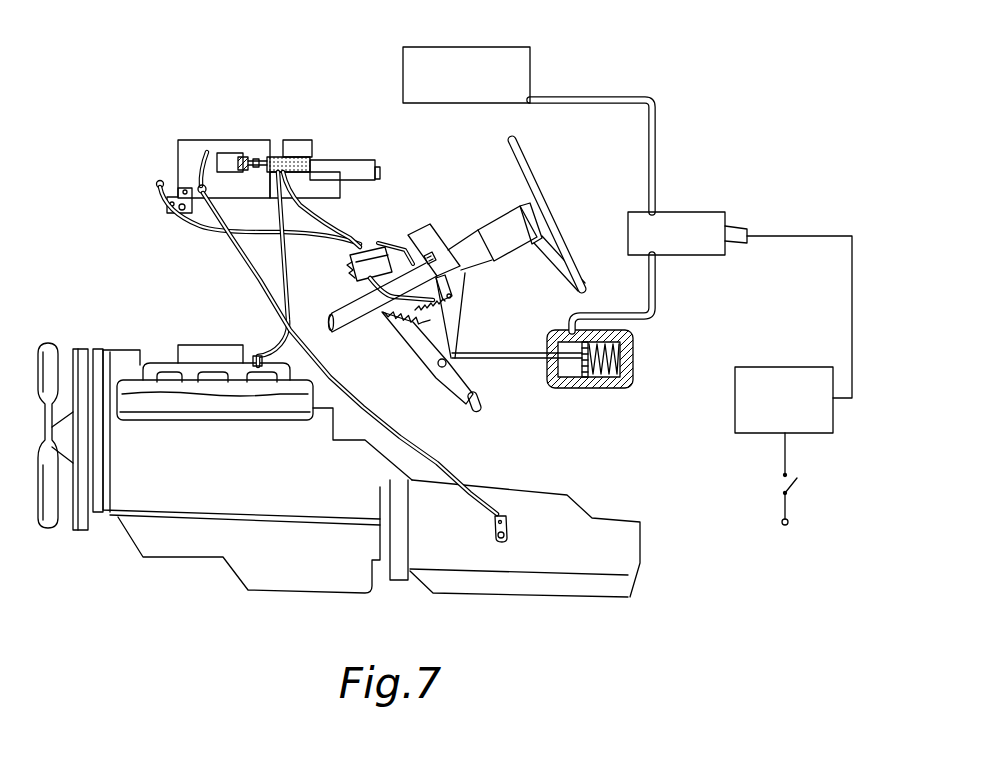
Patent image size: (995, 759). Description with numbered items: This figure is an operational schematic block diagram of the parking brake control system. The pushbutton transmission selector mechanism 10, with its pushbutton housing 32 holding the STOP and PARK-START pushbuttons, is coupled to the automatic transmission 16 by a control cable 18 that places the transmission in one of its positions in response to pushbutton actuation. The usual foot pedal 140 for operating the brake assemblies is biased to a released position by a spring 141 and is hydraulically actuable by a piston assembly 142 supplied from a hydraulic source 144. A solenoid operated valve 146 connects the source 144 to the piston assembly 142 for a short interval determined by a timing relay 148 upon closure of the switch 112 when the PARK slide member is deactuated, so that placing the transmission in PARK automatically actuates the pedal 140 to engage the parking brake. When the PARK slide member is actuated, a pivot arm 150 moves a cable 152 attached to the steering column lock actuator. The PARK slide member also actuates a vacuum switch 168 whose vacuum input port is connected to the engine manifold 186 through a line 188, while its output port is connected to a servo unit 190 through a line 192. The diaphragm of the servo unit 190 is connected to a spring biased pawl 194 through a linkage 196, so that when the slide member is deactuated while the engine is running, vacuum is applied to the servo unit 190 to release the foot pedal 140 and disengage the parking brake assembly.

The pushbutton transmission selector mechanism 10 is at (220, 138).
The automatic transmission 16 is at (553, 503).
The control cable 18 is at (371, 407).
The pushbutton housing 32 is at (355, 170).
The travel switch 112 is at (800, 487).
The foot pedal 140 is at (454, 355).
The spring 141 is at (385, 323).
The piston assembly 142 is at (566, 380).
The hydraulic source 144 is at (455, 47).
The solenoid operated valve 146 is at (693, 212).
The timing relay 148 is at (803, 367).
The pivot arm 150 is at (158, 189).
The cable 152 is at (210, 237).
The vacuum switch 168 is at (307, 163).
The engine manifold 186 is at (285, 380).
The line 188 is at (291, 297).
The servo unit 190 is at (348, 260).
The line 192 is at (323, 219).
The spring biased pawl 194 is at (453, 302).
The linkage 196 is at (399, 290).